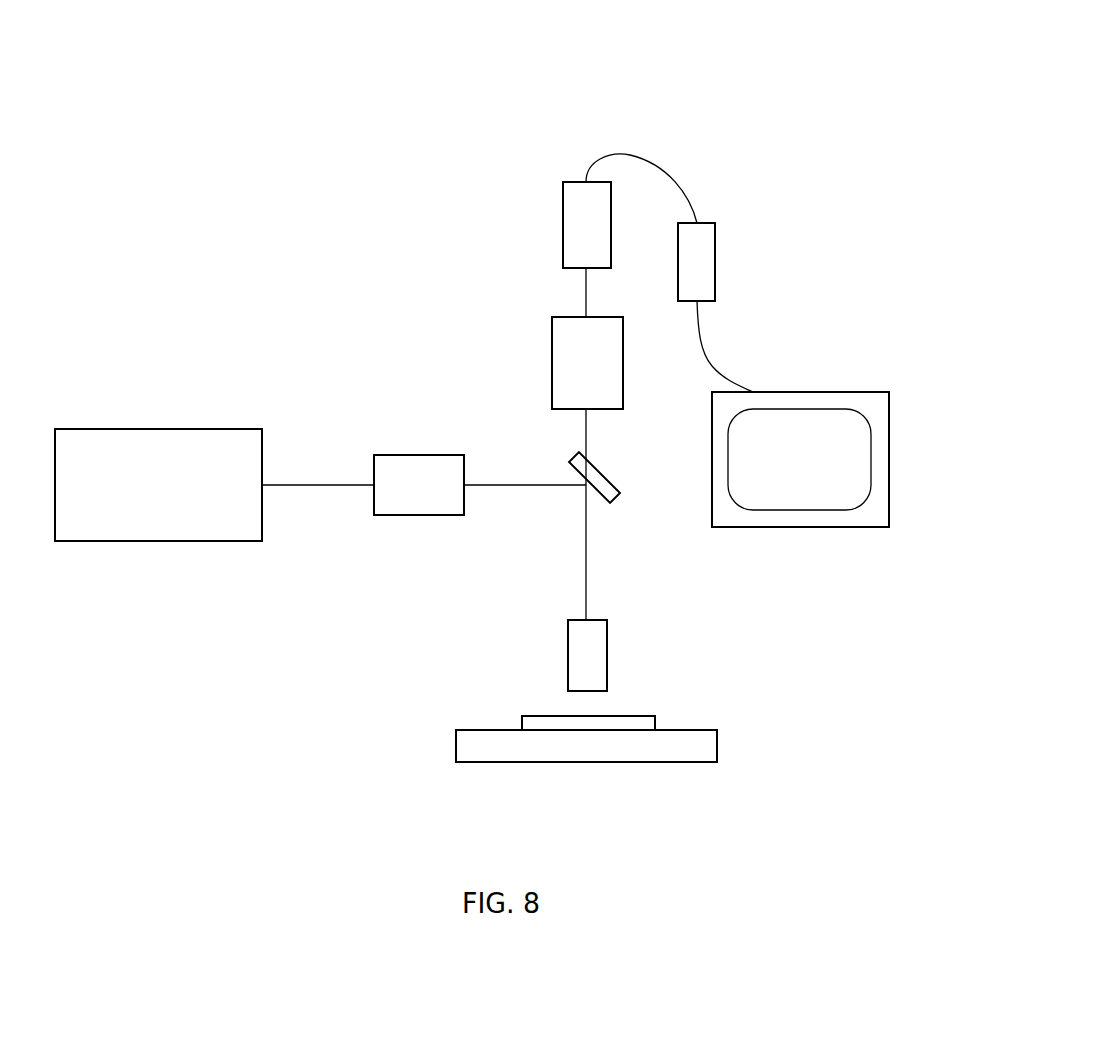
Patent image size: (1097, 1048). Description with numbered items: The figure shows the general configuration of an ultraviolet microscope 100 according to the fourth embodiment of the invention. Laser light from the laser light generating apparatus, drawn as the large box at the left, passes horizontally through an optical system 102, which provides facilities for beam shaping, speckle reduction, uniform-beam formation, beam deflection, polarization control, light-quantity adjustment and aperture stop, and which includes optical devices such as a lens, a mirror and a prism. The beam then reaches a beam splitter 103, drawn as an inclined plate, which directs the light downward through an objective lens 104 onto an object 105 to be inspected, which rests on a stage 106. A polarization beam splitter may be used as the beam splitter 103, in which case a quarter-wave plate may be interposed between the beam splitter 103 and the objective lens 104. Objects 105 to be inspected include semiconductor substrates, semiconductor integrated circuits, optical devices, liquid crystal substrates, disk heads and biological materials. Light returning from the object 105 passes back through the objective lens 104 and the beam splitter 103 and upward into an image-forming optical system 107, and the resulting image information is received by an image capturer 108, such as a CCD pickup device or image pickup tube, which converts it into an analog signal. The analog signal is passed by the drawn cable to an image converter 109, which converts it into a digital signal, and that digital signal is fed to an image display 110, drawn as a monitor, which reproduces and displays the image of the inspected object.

The ultraviolet microscope 100 is at (702, 130).
The optical system 102 is at (440, 455).
The beam splitter 103 is at (612, 474).
The objective lens 104 is at (607, 638).
The object to be inspected 105 is at (655, 722).
The stage 106 is at (717, 740).
The image-forming optical system 107 is at (552, 338).
The image capturer 108 is at (563, 203).
The image converter 109 is at (715, 243).
The image display 110 is at (855, 392).